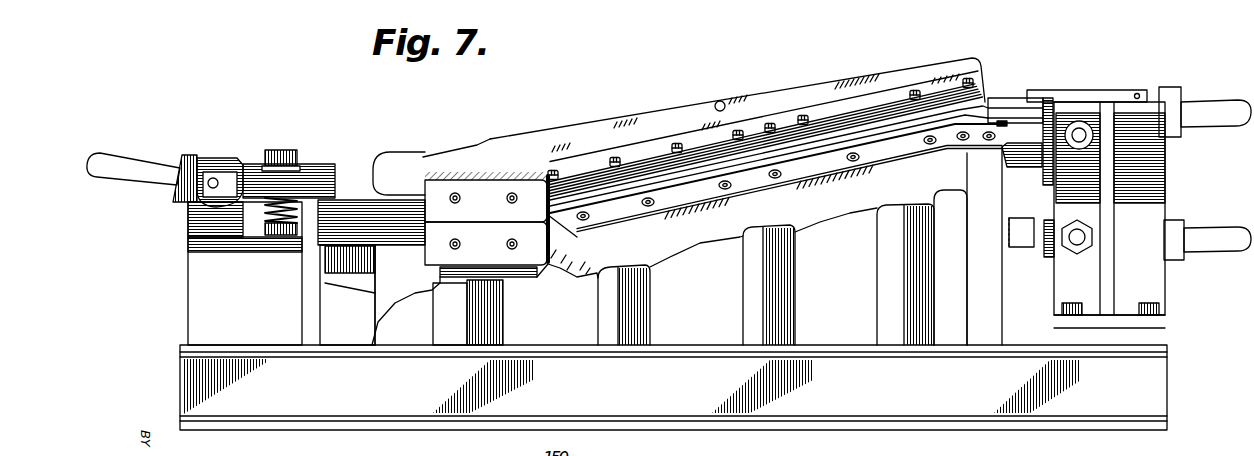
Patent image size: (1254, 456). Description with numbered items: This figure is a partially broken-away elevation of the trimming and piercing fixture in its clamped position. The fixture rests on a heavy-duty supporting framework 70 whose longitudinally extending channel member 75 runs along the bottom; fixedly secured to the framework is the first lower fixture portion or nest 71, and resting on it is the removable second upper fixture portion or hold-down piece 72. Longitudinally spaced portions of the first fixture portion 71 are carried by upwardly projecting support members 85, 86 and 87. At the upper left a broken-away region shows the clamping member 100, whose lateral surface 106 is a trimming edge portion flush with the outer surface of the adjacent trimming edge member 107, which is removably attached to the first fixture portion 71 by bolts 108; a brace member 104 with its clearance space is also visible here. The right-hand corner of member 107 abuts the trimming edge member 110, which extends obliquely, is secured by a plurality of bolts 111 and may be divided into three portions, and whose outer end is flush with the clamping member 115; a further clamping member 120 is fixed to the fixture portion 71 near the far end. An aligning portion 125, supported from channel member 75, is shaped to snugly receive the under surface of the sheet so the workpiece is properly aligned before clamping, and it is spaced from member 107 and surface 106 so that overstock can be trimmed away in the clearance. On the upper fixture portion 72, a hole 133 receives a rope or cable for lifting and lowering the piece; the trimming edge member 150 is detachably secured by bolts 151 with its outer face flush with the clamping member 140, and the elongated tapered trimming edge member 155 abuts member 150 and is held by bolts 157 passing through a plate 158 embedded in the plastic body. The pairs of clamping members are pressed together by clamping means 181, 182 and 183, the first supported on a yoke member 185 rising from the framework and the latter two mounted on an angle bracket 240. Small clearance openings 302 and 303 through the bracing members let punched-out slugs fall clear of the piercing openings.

The supporting framework 70 is at (1176, 380).
The first lower fixture portion 71 is at (830, 200).
The second upper fixture portion 72 is at (680, 88).
The channel member 75 is at (833, 410).
The support member 85 is at (650, 325).
The support member 86 is at (796, 325).
The support member 87 is at (886, 300).
The clamping member 100 is at (313, 252).
The brace member 104 is at (355, 284).
The lateral surface 106 is at (386, 248).
The trimming edge member 107 is at (535, 258).
The bolts 108 is at (508, 248).
The trimming edge member 110 is at (702, 202).
The bolts 111 is at (589, 219).
The clamping member 115 is at (1020, 115).
The clamping member 120 is at (1019, 270).
The aligning portion 125 is at (419, 334).
The hole 133 is at (722, 101).
The clamping member 140 is at (347, 188).
The trimming edge member 150 is at (476, 182).
The bolts 151 is at (508, 202).
The elongated tapered trimming edge member 155 is at (982, 102).
The bolts 157 is at (615, 157).
The plate 158 is at (852, 112).
The clamping means 181 is at (188, 149).
The clamping means 182 is at (1191, 85).
The clamping means 183 is at (1184, 272).
The yoke member 185 is at (190, 311).
The angle bracket 240 is at (1160, 178).
The clearance opening 302 is at (1003, 120).
The clearance opening 303 is at (1005, 226).